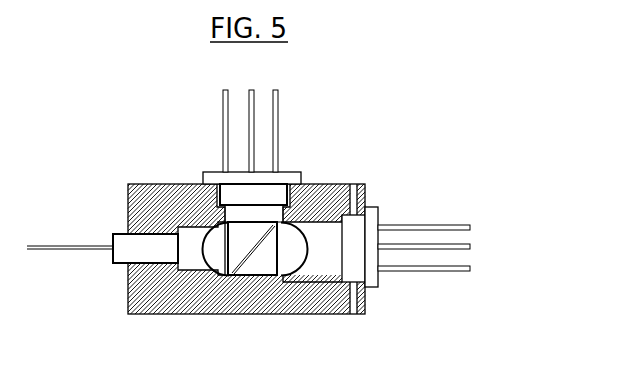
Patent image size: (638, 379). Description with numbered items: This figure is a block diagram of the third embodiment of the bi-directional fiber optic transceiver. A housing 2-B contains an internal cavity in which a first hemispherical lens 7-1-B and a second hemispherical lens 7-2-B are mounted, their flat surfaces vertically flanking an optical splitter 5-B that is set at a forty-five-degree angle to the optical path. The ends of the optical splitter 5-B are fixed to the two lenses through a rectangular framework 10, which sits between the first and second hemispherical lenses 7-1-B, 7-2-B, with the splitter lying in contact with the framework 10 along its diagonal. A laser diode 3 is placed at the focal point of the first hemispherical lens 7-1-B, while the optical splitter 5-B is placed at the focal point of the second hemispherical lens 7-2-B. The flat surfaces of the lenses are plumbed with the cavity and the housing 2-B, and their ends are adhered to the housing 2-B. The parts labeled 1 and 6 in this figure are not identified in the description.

The light emitting/receiving element header 1 is at (268, 178).
The rectangular framework 10 is at (281, 245).
The housing 2-B is at (142, 218).
The laser diode 3 is at (372, 278).
The optical splitter 5-B is at (236, 270).
The optical fiber ferrule 6 is at (118, 255).
The first hemispherical lens 7-1-B is at (285, 268).
The second hemispherical lens 7-2-B is at (218, 242).